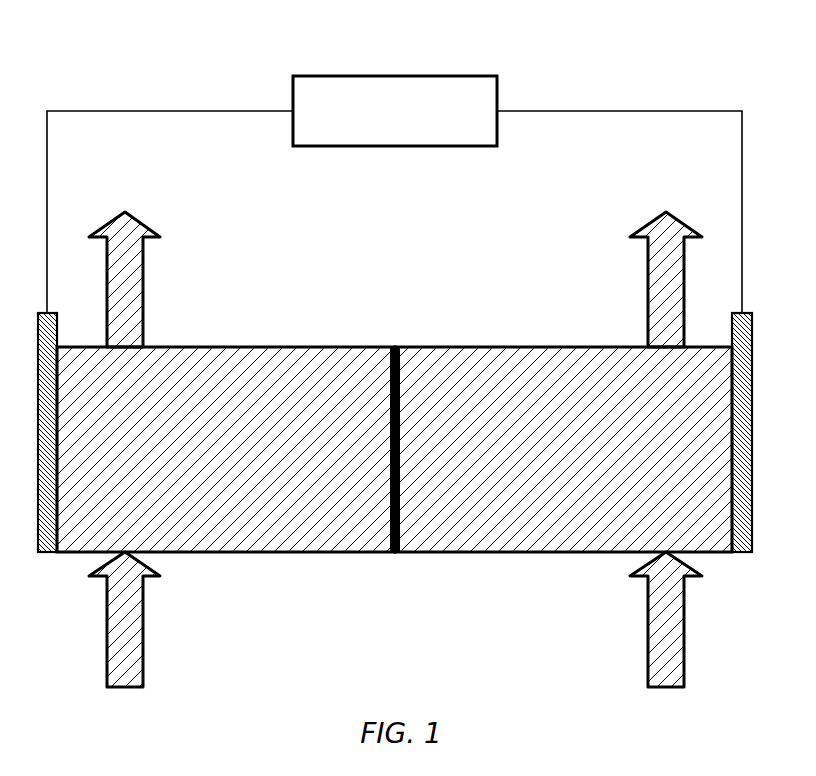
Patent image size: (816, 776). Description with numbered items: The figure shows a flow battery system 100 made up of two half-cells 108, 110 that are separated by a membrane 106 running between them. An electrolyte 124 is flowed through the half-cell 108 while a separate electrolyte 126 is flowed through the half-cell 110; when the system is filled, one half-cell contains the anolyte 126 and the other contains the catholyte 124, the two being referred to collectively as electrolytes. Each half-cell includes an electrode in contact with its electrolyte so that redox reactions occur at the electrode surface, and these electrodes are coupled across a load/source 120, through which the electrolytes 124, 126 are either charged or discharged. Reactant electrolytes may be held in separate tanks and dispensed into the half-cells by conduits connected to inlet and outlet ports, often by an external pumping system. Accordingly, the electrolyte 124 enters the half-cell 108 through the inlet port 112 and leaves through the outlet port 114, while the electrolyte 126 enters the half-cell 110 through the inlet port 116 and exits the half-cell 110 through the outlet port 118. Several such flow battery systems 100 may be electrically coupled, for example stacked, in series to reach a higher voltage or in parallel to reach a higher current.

The flow battery system 100 is at (146, 70).
The membrane 106 is at (392, 347).
The half-cell 108 is at (257, 357).
The half-cell 110 is at (508, 357).
The inlet port 112 is at (143, 627).
The outlet port 114 is at (143, 285).
The inlet port 116 is at (685, 627).
The outlet port 118 is at (648, 272).
The load/source 120 is at (377, 134).
The electrolyte 124 is at (355, 535).
The electrolyte 126 is at (467, 535).